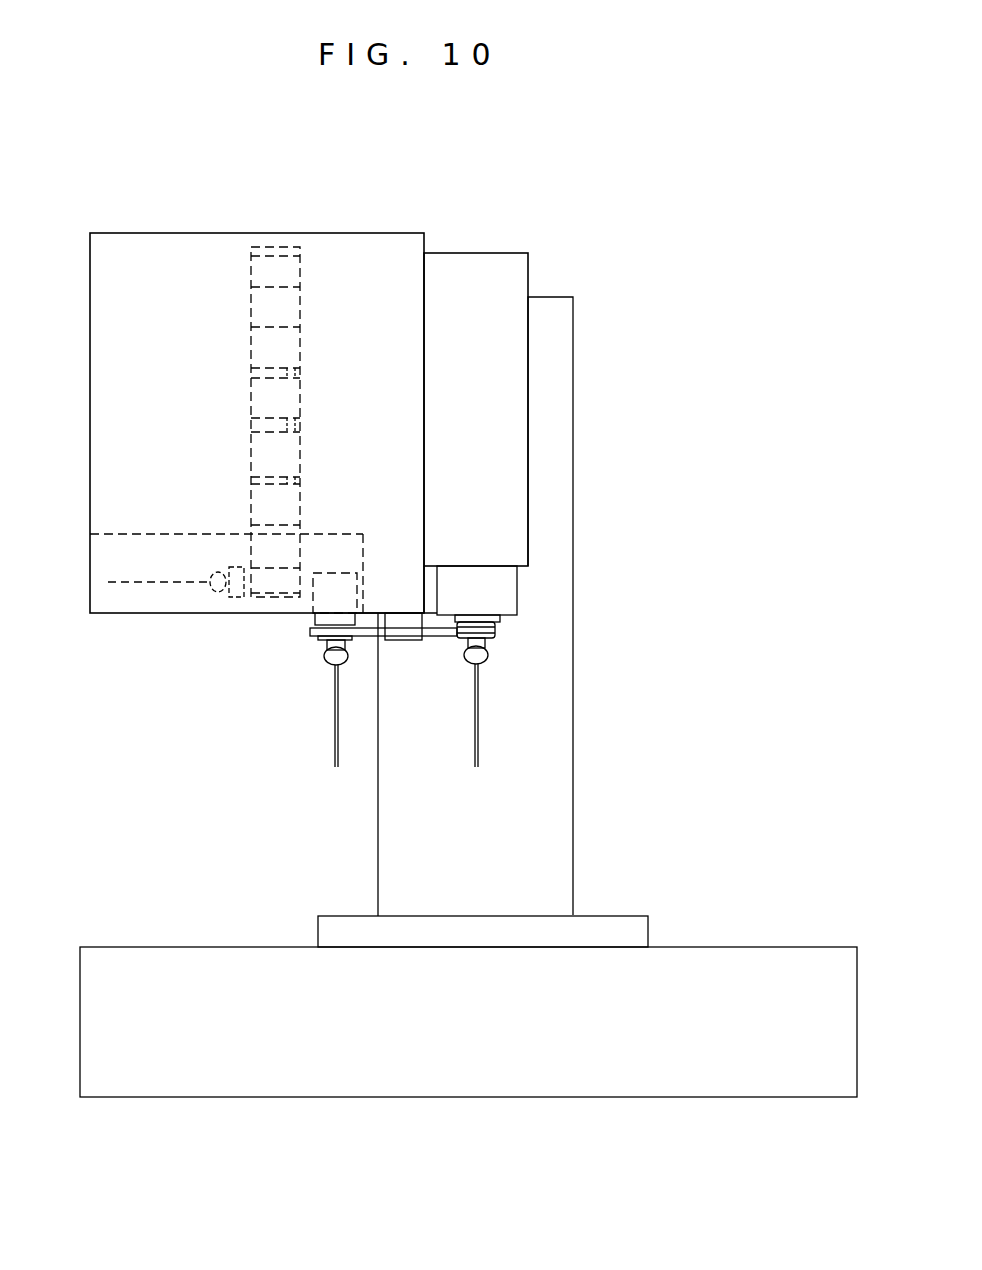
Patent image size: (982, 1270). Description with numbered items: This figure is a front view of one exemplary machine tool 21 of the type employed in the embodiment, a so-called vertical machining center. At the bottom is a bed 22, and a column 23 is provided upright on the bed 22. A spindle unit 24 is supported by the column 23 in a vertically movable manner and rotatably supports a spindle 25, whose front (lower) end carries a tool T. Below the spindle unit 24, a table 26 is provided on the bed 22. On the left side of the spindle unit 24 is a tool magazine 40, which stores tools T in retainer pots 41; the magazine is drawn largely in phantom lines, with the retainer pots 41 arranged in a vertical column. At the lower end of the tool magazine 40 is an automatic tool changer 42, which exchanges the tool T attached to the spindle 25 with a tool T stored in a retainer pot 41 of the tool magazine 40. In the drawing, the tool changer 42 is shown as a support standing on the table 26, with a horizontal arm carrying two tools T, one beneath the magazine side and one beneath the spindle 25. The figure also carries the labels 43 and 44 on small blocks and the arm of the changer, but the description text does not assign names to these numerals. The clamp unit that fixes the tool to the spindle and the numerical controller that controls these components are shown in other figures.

The machine tool 21 is at (730, 188).
The bed 22 is at (757, 950).
The column 23 is at (568, 388).
The spindle unit 24 is at (498, 257).
The spindle 25 is at (512, 617).
The table 26 is at (629, 923).
The tool magazine 40 is at (308, 203).
The retainer pot 41 is at (253, 400).
The automatic tool changer 42 is at (403, 683).
The holding block 43 is at (298, 425).
The bar 44 is at (428, 640).
The tool T is at (318, 645).